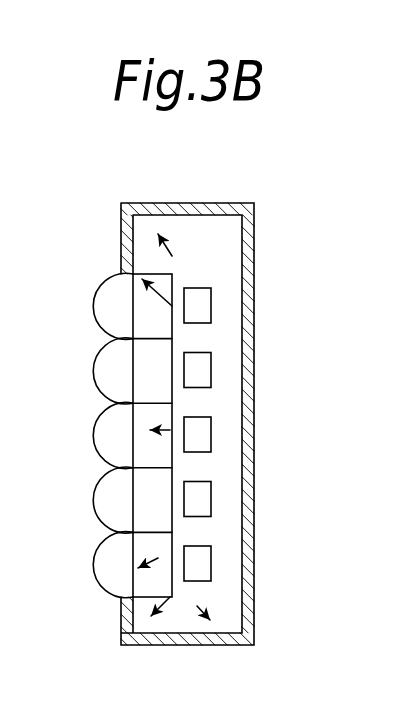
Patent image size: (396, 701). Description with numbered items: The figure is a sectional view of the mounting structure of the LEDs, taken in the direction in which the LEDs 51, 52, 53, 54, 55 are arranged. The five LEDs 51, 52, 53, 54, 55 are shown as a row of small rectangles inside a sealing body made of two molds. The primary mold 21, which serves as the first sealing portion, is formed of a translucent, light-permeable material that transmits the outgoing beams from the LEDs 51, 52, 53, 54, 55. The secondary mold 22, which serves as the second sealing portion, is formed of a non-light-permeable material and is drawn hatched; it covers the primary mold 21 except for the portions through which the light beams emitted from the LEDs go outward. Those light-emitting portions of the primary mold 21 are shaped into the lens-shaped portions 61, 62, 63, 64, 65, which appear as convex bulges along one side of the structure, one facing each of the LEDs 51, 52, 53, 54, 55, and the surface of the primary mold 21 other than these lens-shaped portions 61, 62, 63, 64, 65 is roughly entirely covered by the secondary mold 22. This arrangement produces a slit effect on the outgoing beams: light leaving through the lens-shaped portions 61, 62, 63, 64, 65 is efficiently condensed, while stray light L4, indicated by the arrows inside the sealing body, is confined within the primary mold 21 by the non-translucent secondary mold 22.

The primary mold 21 is at (222, 240).
The secondary mold 22 is at (120, 612).
The LED 51 is at (203, 307).
The LED 52 is at (203, 370).
The LED 53 is at (203, 436).
The LED 54 is at (203, 498).
The LED 55 is at (203, 563).
The lens-shaped portion 61 is at (112, 300).
The lens-shaped portion 62 is at (112, 364).
The lens-shaped portion 63 is at (112, 427).
The lens-shaped portion 64 is at (112, 488).
The lens-shaped portion 65 is at (112, 545).
The stray light L4 is at (170, 257).